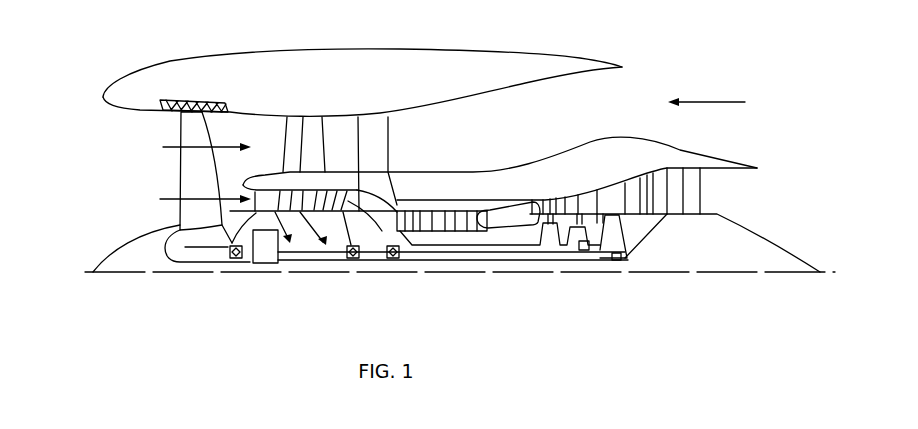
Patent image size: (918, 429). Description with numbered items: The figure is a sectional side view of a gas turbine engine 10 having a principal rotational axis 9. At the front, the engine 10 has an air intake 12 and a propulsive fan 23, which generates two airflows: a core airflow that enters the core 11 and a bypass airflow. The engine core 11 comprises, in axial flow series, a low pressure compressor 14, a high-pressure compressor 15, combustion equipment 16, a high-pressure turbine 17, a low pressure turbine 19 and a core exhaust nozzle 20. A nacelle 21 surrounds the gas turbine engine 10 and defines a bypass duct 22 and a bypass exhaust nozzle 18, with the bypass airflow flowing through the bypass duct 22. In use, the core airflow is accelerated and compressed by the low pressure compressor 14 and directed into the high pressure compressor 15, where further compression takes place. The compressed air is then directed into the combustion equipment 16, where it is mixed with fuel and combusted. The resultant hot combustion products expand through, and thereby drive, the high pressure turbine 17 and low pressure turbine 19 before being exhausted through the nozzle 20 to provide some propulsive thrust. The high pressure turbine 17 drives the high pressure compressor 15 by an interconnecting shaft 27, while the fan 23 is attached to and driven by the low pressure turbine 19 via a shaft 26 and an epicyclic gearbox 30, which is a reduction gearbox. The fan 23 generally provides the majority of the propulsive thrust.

The principal rotational axis 9 is at (670, 273).
The gas turbine engine 10 is at (163, 62).
The core 11 is at (497, 186).
The air intake 12 is at (116, 134).
The low pressure compressor 14 is at (322, 122).
The high-pressure compressor 15 is at (443, 210).
The combustion equipment 16 is at (520, 218).
The high-pressure turbine 17 is at (562, 210).
The bypass exhaust nozzle 18 is at (717, 104).
The low pressure turbine 19 is at (677, 180).
The core exhaust nozzle 20 is at (737, 198).
The nacelle 21 is at (380, 62).
The bypass duct 22 is at (577, 116).
The propulsive fan 23 is at (185, 172).
The shaft 26 is at (447, 260).
The interconnecting shaft 27 is at (477, 252).
The epicyclic gearbox 30 is at (267, 250).